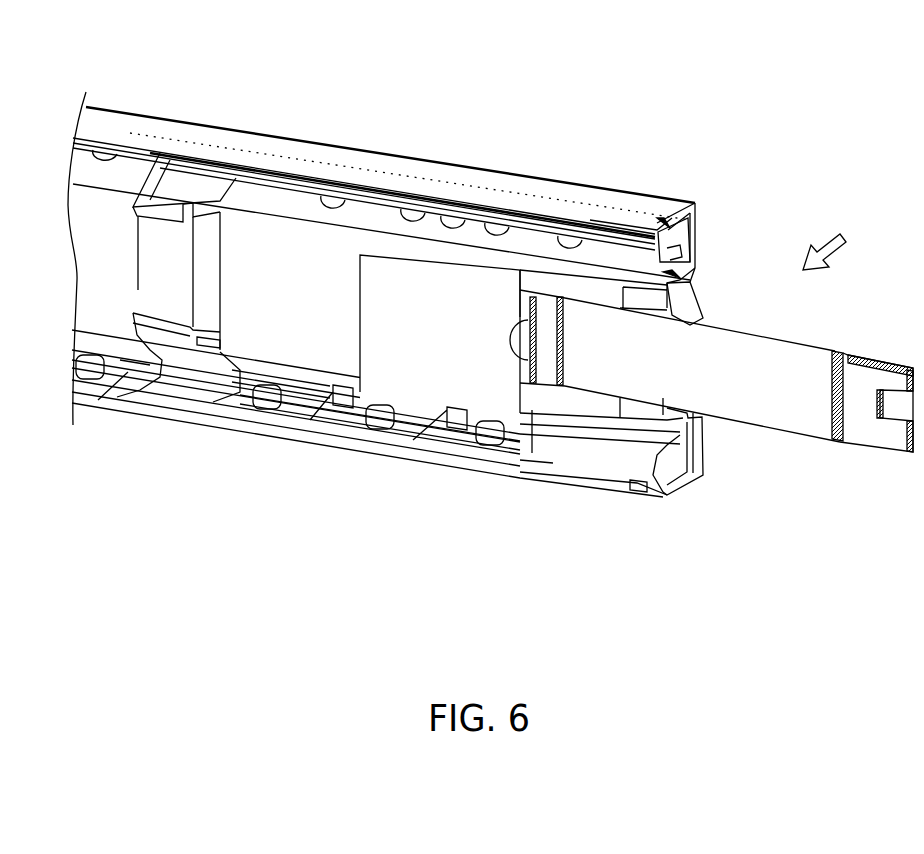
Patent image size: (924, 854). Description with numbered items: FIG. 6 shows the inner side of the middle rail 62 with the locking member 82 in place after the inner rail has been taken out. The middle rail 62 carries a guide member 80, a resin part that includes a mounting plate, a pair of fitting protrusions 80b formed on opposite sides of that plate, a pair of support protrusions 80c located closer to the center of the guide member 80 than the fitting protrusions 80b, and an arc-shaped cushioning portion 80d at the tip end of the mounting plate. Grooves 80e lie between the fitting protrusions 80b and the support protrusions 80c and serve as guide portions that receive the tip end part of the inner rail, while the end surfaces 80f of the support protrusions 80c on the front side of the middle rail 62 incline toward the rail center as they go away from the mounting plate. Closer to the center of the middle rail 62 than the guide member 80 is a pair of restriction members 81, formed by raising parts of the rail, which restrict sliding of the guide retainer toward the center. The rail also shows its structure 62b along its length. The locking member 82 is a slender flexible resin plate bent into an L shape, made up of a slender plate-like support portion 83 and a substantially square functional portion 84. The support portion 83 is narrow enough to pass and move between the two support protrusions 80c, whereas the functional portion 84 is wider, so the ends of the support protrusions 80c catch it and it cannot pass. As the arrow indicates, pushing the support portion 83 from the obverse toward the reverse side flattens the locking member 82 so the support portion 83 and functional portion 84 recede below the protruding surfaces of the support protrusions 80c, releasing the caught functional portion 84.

The middle rail 62 is at (338, 144).
The guide rail 62b is at (261, 190).
The guide member 80 is at (686, 272).
The fitting protrusions 80b is at (579, 248).
The support protrusions 80c is at (540, 457).
The cushioning portion 80d is at (710, 300).
The grooves 80e is at (670, 222).
The end surfaces 80f is at (646, 440).
The restriction members 81 is at (170, 200).
The locking member 82 is at (815, 341).
The support portion 83 is at (783, 402).
The functional portion 84 is at (424, 358).